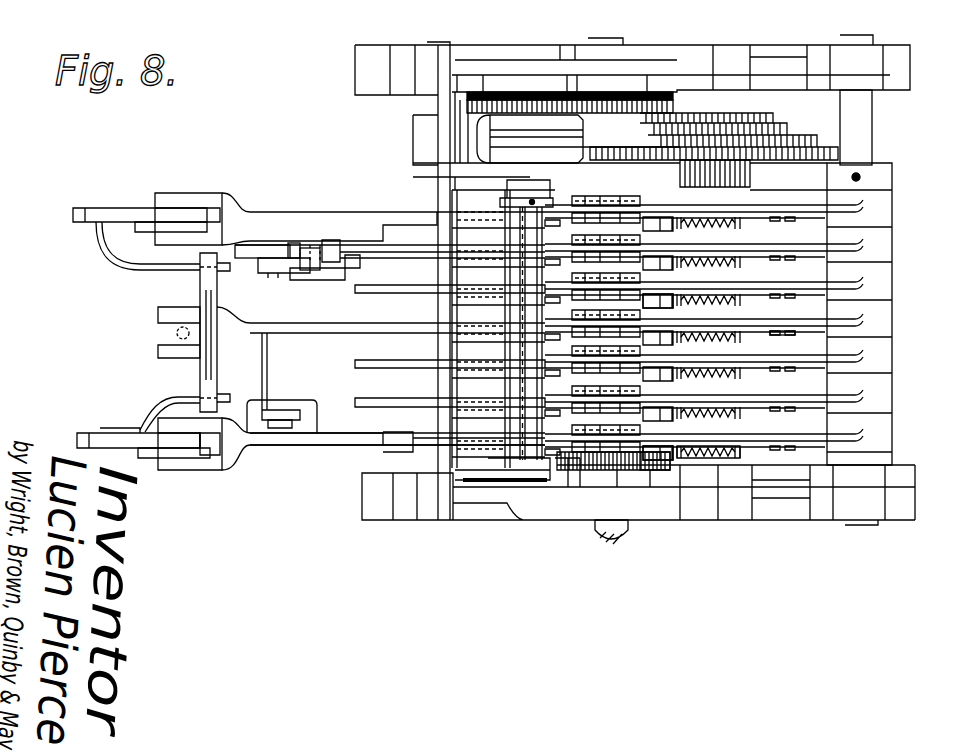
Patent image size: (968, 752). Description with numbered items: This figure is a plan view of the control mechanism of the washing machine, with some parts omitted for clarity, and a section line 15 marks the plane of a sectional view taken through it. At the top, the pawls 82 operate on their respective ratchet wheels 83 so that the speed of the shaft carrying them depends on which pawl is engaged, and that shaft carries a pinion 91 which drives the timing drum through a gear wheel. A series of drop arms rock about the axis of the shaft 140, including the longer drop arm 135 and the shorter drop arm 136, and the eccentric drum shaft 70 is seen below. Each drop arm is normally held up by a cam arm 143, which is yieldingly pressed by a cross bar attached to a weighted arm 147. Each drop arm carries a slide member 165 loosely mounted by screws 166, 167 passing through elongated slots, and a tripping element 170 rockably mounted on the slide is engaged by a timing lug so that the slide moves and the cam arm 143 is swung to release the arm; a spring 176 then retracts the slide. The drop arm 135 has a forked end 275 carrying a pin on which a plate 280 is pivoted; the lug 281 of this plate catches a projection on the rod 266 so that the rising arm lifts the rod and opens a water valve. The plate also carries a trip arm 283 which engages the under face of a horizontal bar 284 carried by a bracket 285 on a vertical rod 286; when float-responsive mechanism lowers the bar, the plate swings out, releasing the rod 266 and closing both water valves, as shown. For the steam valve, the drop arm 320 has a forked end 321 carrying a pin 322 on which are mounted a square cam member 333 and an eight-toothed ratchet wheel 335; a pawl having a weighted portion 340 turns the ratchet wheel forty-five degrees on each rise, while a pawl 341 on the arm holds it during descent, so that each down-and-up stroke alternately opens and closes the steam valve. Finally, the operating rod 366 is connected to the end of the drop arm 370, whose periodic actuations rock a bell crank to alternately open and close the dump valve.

The section line 15 is at (59, 273).
The eccentric drum shaft 70 is at (612, 530).
The pawl 82 is at (510, 150).
The ratchet wheel 83 is at (795, 137).
The pinion 91 is at (752, 180).
The drop arm 135 is at (365, 445).
The drop arm 136 is at (370, 400).
The shaft 140 is at (862, 128).
The cam arm 143 is at (470, 340).
The weighted arm 147 is at (385, 433).
The slide member 165 is at (745, 296).
The screw 166 is at (563, 470).
The screw 167 is at (778, 337).
The tripping element 170 is at (680, 458).
The spring 176 is at (720, 455).
The rod 266 is at (205, 455).
The forked end 275 is at (187, 470).
The plate 280 is at (100, 433).
The lug 281 is at (148, 458).
The trip arm 283 is at (165, 395).
The horizontal bar 284 is at (205, 372).
The bracket 285 is at (268, 372).
The vertical rod 286 is at (282, 428).
The drop arm 320 is at (357, 215).
The forked end 321 is at (338, 272).
The pin 322 is at (303, 280).
The square cam member 333 is at (298, 250).
The ratchet wheel 335 is at (308, 255).
The weighted portion 340 is at (247, 245).
The pawl 341 is at (362, 262).
The operating rod 366 is at (176, 330).
The drop arm 370 is at (358, 330).